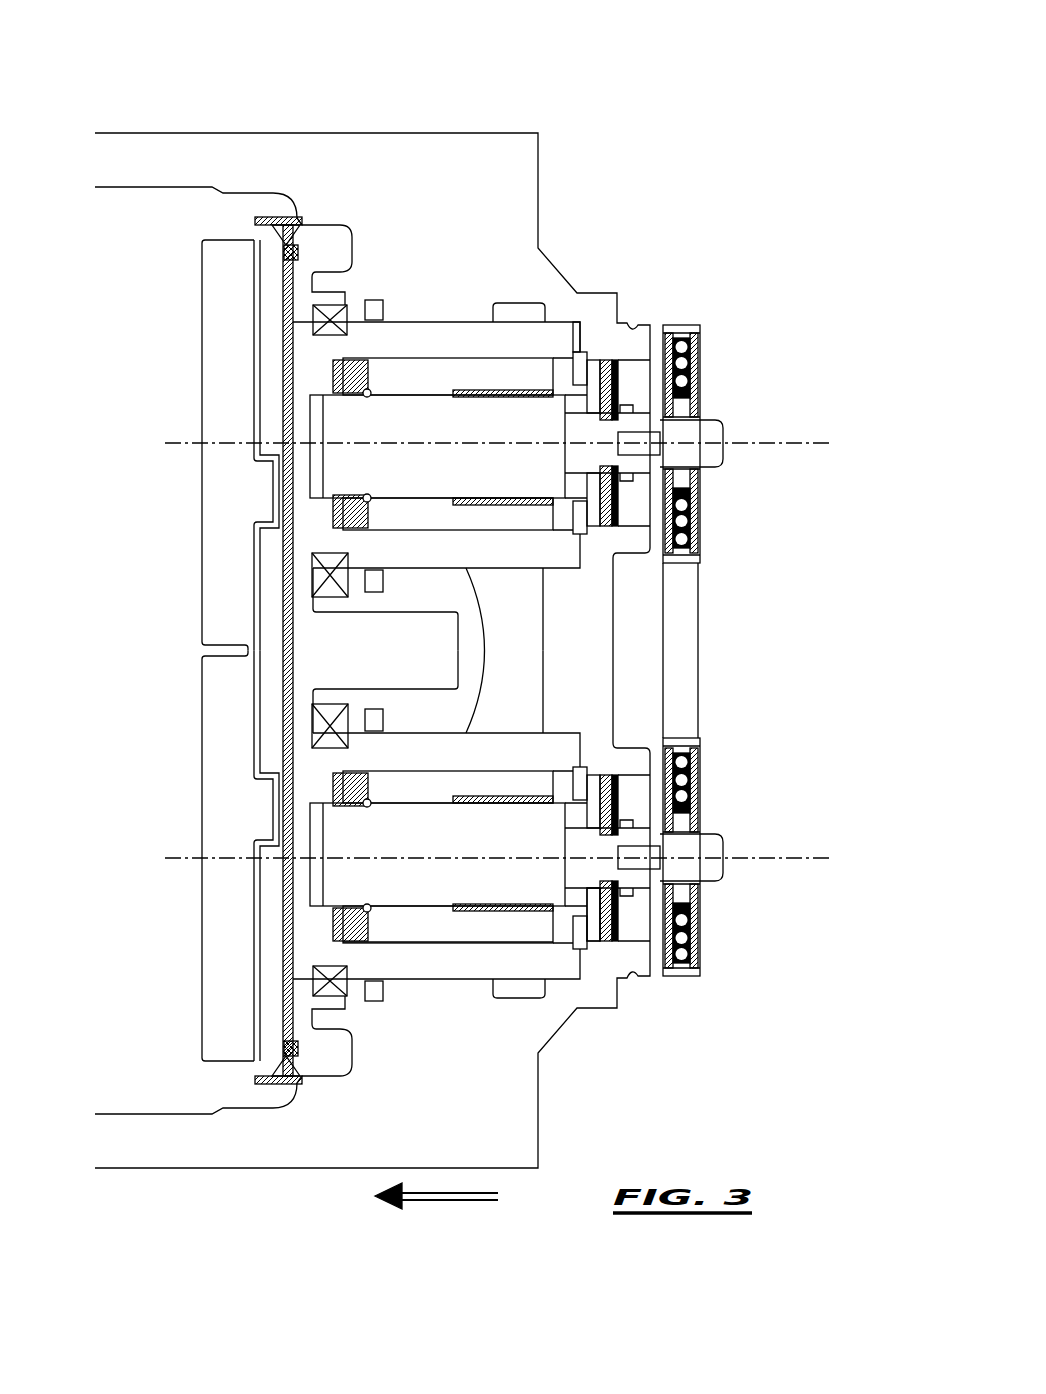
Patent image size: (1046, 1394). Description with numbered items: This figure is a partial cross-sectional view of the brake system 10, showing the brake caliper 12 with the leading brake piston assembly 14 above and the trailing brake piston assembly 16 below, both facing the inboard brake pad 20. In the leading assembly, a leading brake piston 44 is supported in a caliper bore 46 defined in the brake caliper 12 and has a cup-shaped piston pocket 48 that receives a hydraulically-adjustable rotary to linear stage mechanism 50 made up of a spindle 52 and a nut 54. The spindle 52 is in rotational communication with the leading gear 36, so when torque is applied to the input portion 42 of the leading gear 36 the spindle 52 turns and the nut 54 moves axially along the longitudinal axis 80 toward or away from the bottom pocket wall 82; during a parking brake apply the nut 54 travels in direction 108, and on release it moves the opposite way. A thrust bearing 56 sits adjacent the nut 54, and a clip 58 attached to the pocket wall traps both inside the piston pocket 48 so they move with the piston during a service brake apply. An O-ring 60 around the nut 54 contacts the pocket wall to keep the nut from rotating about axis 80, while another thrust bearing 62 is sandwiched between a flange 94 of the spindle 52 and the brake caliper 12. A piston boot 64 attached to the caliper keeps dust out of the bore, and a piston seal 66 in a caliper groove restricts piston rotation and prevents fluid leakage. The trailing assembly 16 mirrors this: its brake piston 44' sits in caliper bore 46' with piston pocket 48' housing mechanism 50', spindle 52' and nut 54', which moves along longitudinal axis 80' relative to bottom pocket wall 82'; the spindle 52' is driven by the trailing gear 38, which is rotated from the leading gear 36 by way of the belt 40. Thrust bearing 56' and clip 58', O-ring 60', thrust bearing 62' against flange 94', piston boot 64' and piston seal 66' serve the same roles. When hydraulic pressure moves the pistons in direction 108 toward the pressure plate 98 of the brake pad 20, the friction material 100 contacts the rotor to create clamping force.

The brake system 10 is at (628, 84).
The brake caliper 12 is at (395, 133).
The leading brake piston assembly 14 is at (418, 318).
The trailing brake piston assembly 16 is at (442, 990).
The inboard brake pad 20 is at (228, 243).
The leading gear 36 is at (700, 345).
The trailing gear 38 is at (700, 765).
The belt 40 is at (688, 593).
The input portion 42 is at (720, 440).
The leading brake piston 44 is at (577, 296).
The brake piston 44' is at (644, 747).
The caliper bore 46 is at (538, 251).
The caliper bore 46' is at (625, 828).
The piston pocket 48 is at (614, 295).
The piston pocket 48' is at (448, 1014).
The hydraulically-adjustable rotary to linear stage mechanism 50 is at (547, 578).
The hydraulically-adjustable rotary to linear stage mechanism 50' is at (532, 983).
The spindle 52 is at (485, 446).
The spindle 52' is at (485, 854).
The nut 54 is at (448, 377).
The nut 54' is at (448, 788).
The thrust bearing 56 is at (608, 566).
The thrust bearing 56' is at (629, 968).
The clip 58 is at (661, 324).
The clip 58' is at (694, 777).
The O-ring 60 is at (253, 530).
The O-ring 60' is at (258, 779).
The thrust bearing 62 is at (675, 396).
The thrust bearing 62' is at (669, 887).
The piston boot 64 is at (241, 301).
The piston boot 64' is at (246, 774).
The piston seal 66 is at (342, 330).
The piston seal 66' is at (382, 923).
The longitudinal axis 80 is at (488, 412).
The longitudinal axis 80' is at (489, 826).
The bottom pocket wall 82 is at (377, 312).
The bottom pocket wall 82' is at (329, 1022).
The flange 94 is at (722, 511).
The flange 94' is at (683, 939).
The pressure plate 98 is at (270, 258).
The friction material 100 is at (217, 357).
The direction 108 is at (450, 1202).